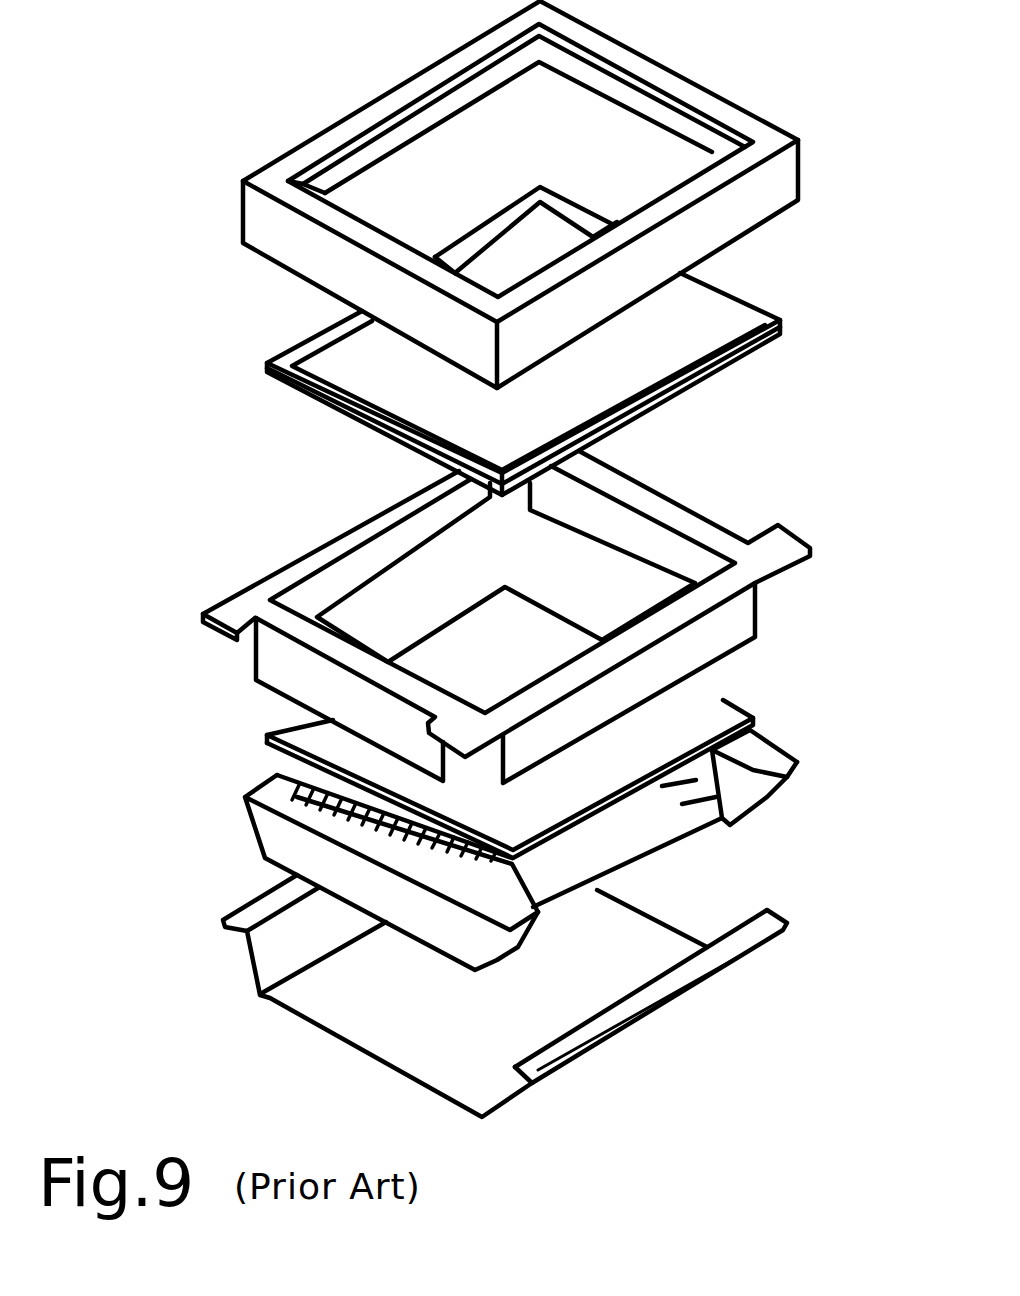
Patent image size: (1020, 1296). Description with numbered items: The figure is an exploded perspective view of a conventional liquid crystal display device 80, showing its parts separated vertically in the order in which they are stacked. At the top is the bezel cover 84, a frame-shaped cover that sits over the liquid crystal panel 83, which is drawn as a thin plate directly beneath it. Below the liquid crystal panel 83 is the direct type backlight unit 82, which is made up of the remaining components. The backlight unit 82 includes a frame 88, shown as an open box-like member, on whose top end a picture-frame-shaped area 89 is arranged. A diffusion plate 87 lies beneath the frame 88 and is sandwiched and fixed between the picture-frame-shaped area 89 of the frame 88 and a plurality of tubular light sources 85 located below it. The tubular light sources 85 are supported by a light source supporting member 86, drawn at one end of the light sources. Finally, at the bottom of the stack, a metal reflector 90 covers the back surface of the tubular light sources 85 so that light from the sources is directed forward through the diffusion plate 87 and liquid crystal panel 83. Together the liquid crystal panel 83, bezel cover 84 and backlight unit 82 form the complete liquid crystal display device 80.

The liquid crystal display device 80 is at (110, 1075).
The direct type backlight unit 82 is at (198, 592).
The liquid crystal panel 83 is at (688, 338).
The bezel cover 84 is at (748, 128).
The tubular light sources 85 is at (647, 843).
The light source supporting member 86 is at (770, 792).
The diffusion plate 87 is at (738, 719).
The frame 88 is at (745, 622).
The picture-frame-shaped area 89 is at (673, 512).
The metal reflector 90 is at (648, 993).